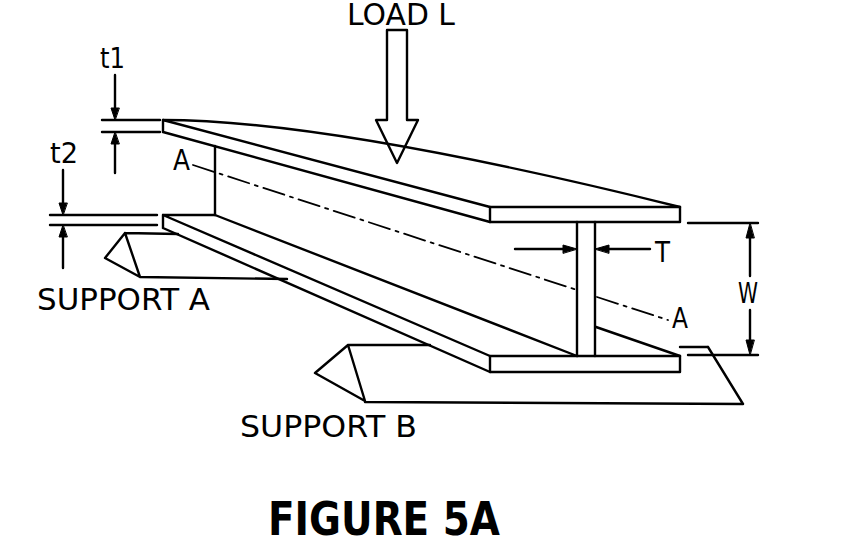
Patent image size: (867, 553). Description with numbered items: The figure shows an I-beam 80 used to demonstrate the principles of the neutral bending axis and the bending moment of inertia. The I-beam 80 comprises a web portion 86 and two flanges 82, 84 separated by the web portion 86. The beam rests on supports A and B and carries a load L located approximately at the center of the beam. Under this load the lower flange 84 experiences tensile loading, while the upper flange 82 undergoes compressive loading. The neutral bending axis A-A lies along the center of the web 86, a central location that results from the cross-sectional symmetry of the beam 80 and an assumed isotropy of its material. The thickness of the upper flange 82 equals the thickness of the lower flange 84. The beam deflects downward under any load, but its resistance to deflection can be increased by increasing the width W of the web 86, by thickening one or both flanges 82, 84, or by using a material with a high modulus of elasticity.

The I-beam 80 is at (537, 137).
The upper flange 82 is at (553, 212).
The lower flange 84 is at (627, 368).
The web portion 86 is at (583, 318).